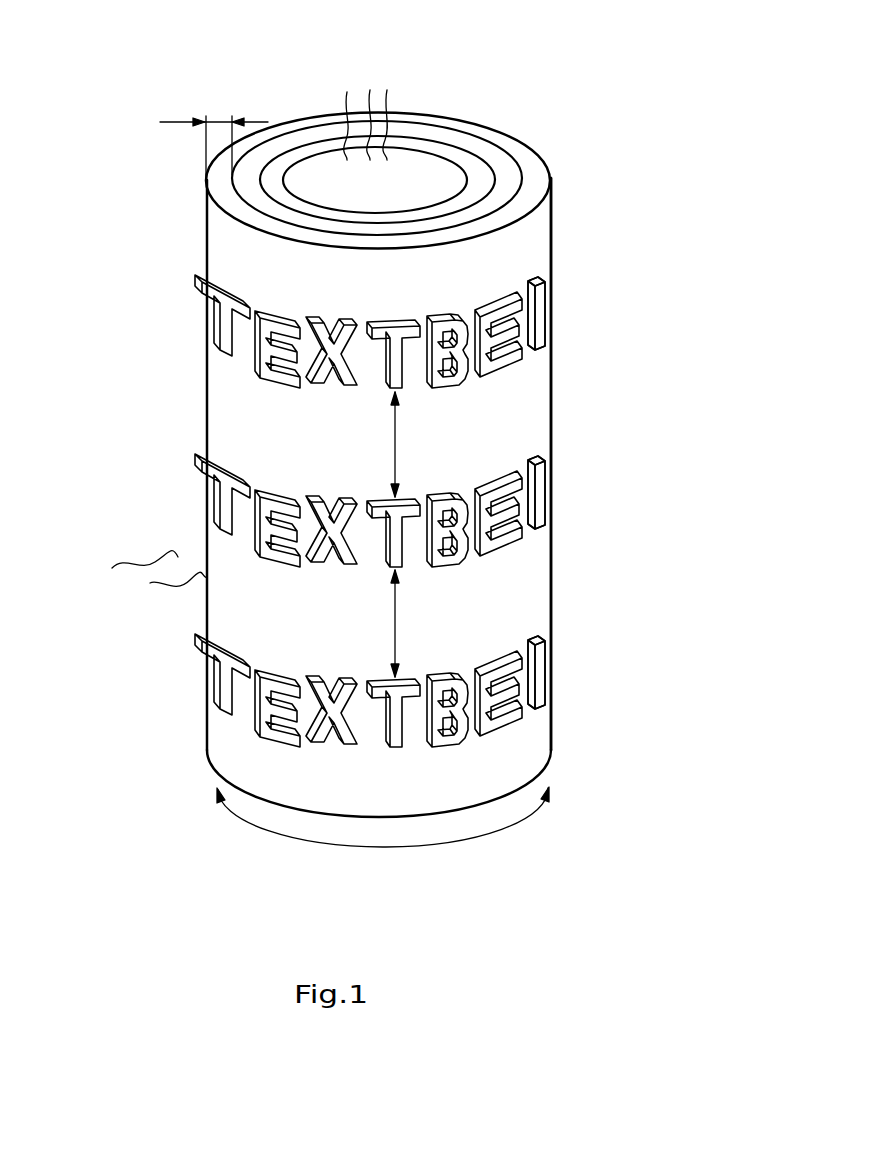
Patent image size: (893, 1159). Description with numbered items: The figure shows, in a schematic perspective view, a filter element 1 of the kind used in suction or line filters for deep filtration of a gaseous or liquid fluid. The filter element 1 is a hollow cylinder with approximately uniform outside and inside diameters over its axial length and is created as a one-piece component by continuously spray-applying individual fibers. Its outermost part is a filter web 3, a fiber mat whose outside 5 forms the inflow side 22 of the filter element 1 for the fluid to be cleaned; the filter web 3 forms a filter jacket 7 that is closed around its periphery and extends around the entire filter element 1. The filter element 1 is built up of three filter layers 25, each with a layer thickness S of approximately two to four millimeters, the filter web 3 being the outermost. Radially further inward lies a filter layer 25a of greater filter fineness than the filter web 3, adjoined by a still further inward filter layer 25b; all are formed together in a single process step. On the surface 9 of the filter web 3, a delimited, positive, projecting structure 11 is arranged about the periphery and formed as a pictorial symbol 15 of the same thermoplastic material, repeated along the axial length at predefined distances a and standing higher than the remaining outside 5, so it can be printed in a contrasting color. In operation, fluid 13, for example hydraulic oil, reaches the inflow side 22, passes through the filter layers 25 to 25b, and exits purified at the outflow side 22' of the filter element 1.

The filter element 1 is at (645, 234).
The filter web 3 is at (275, 125).
The outside 5 is at (200, 403).
The filter jacket 7 is at (363, 849).
The surface 9 is at (555, 392).
The delimited positive projecting structure 11 is at (448, 388).
The fluid 13 is at (372, 92).
The pictorial symbol 15 is at (553, 308).
The inflow side 22 is at (331, 611).
The outflow side 22' is at (492, 114).
The filter layers 25 is at (318, 123).
The further inwardly located filter layer 25a is at (507, 175).
The radially further inwardly located filter layer 25b is at (403, 220).
The layer thickness S is at (223, 121).
The predefined distance a is at (395, 435).